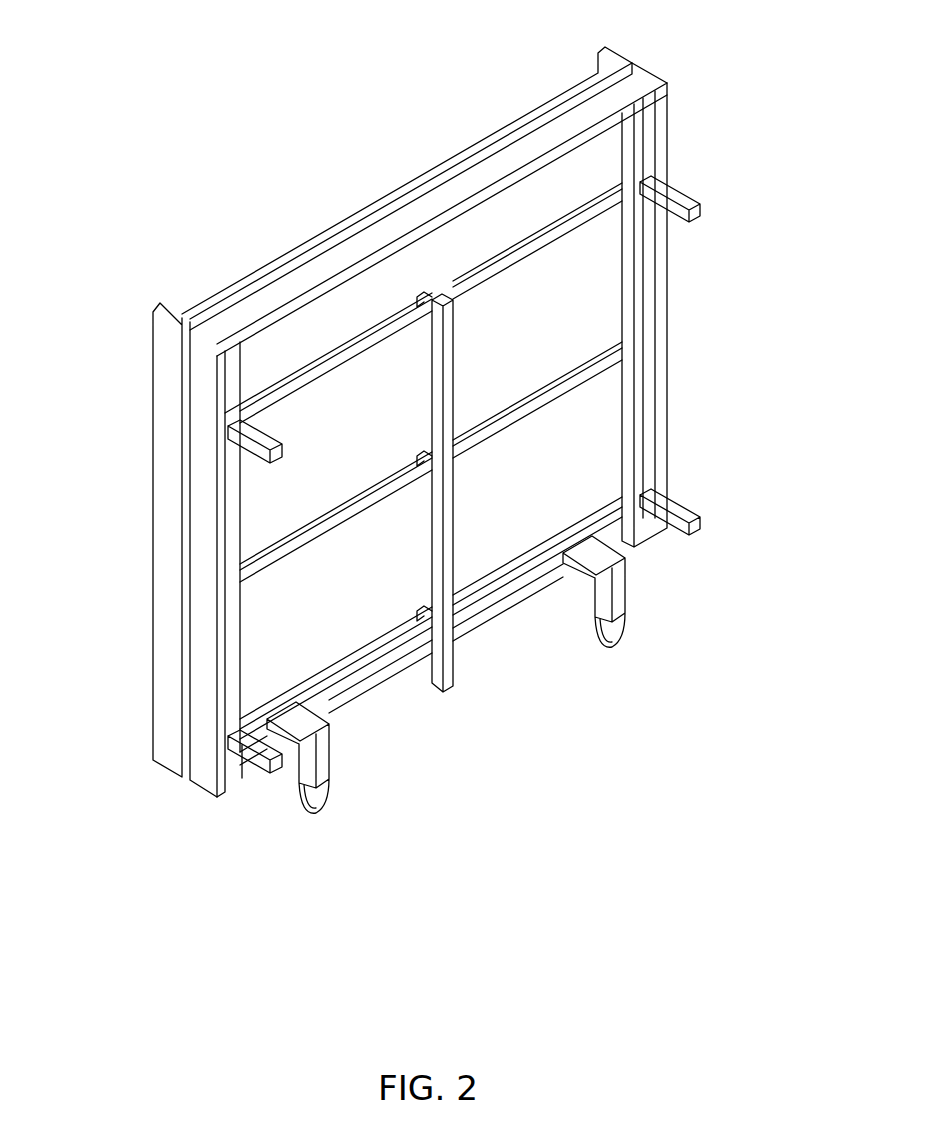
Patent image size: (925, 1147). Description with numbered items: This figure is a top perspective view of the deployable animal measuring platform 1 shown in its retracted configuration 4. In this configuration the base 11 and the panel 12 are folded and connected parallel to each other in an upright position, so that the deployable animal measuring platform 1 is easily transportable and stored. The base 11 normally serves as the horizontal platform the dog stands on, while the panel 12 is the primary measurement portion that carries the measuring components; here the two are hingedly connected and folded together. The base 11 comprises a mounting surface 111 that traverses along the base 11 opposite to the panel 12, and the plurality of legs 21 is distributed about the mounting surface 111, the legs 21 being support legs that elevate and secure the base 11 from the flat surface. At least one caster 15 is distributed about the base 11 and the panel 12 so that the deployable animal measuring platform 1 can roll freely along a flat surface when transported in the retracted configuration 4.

The deployable animal measuring platform 1 is at (441, 406).
The retracted configuration 4 is at (83, 476).
The base 11 is at (404, 406).
The mounting surface 111 is at (655, 253).
The panel 12 is at (594, 66).
The caster 15 is at (629, 630).
The legs 21 is at (704, 208).